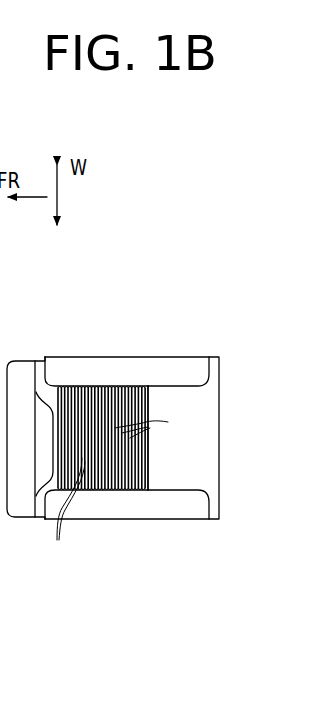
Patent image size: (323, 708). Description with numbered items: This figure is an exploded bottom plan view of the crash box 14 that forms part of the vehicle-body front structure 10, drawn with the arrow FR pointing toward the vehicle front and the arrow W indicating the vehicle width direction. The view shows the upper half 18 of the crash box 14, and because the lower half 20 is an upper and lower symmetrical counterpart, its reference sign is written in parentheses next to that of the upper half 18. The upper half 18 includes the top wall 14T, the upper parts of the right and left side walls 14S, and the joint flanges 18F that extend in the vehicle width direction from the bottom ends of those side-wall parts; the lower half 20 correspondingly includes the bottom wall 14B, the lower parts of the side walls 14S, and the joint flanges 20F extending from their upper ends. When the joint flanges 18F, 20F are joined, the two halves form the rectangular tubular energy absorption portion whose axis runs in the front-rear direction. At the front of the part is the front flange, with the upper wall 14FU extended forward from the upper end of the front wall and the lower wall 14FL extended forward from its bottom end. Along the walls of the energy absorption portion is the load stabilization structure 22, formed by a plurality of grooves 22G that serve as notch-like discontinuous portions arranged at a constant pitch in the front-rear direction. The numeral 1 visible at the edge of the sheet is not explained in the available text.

The upper wall 14FU is at (31, 383).
The lower wall 14FL is at (23, 370).
The joint flange 18F is at (127, 439).
The joint flange 20F is at (162, 565).
The upper half 18 is at (171, 439).
The lower half 20 is at (171, 439).
The side wall 14S is at (197, 390).
The crash box 14 is at (157, 394).
The vehicle-body front structure 10 is at (157, 394).
The top wall 14T is at (175, 446).
The bottom wall 14B is at (200, 463).
The load stabilization structure 22 is at (161, 457).
The groove 22G is at (219, 420).
The rotary electric machine 1 is at (317, 619).